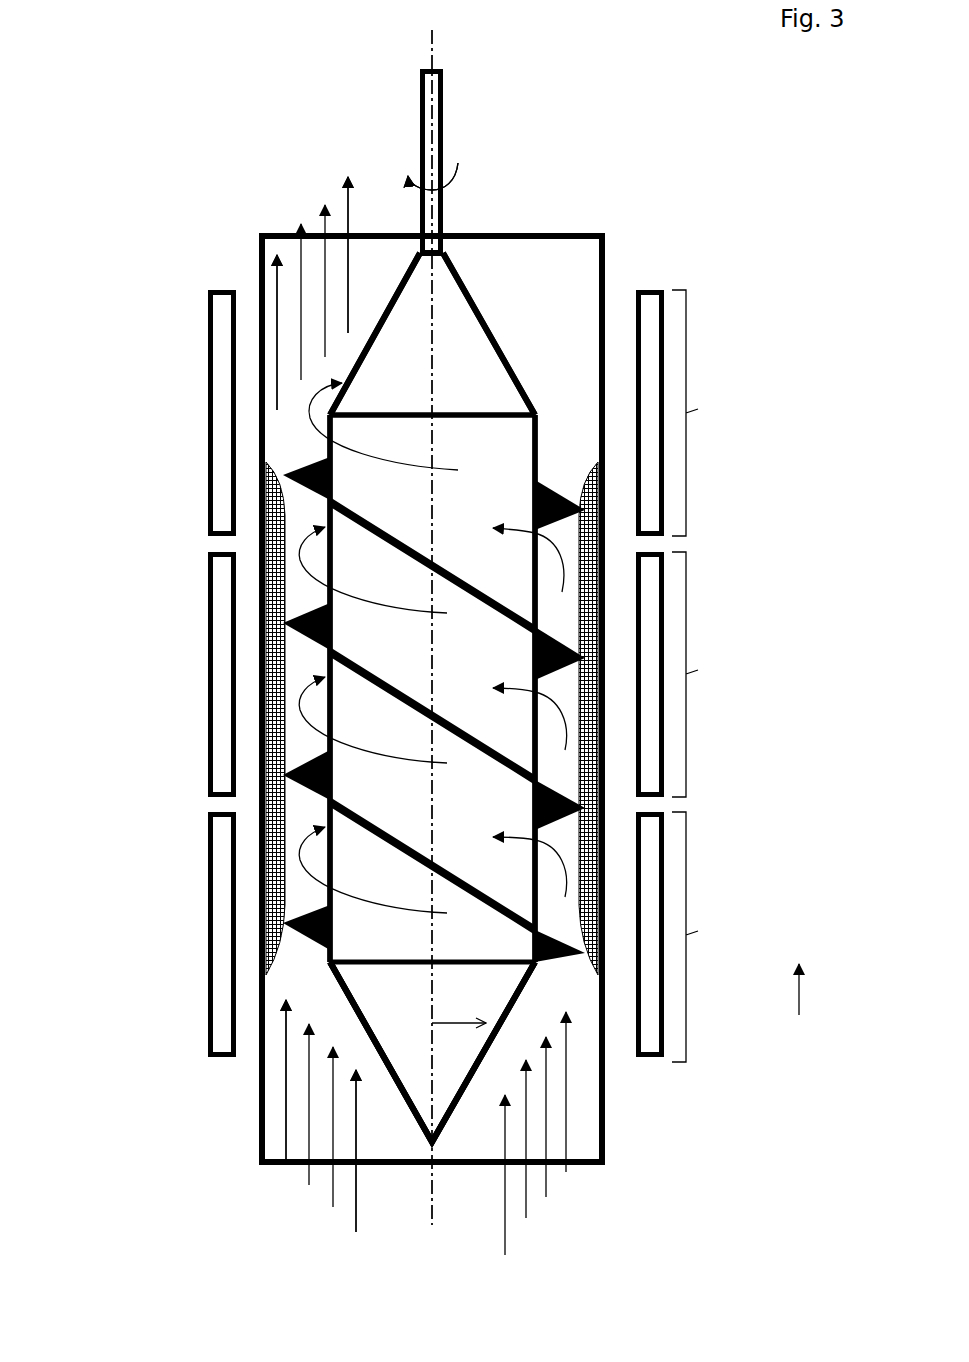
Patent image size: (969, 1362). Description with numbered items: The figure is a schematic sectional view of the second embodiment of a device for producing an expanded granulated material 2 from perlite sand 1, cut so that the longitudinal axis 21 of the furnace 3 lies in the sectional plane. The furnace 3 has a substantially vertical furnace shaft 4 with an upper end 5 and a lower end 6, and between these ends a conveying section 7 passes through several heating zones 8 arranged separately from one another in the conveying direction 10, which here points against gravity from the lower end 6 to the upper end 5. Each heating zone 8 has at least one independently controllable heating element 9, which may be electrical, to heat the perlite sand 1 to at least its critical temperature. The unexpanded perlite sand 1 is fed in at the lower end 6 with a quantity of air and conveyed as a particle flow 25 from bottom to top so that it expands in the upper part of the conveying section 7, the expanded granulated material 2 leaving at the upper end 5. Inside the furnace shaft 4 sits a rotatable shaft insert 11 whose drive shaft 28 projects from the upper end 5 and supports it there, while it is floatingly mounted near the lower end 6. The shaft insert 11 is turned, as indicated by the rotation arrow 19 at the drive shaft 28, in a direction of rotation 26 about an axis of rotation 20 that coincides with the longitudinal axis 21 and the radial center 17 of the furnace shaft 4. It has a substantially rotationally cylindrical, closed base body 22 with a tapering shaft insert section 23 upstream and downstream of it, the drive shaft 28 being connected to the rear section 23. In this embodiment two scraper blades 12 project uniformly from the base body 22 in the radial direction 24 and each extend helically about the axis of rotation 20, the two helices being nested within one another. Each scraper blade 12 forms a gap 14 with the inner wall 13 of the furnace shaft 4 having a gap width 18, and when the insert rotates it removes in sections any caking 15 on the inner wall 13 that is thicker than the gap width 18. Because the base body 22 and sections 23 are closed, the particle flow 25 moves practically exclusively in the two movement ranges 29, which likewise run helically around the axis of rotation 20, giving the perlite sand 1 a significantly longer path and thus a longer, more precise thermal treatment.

The perlite sand 1 is at (360, 1220).
The expanded granulated material 2 is at (348, 200).
The furnace 3 is at (92, 64).
The furnace shaft 4 is at (532, 305).
The upper end 5 is at (600, 236).
The lower end 6 is at (300, 1163).
The conveying section 7 is at (430, 1095).
The heating zones 8 is at (700, 676).
The heating element 9 is at (220, 615).
The conveying direction 10 is at (805, 1000).
The shaft insert 11 is at (322, 697).
The scraper blade 12 is at (305, 792).
The inner wall 13 is at (600, 1107).
The gap 14 is at (604, 940).
The caking 15 is at (264, 553).
The radial center 17 is at (432, 432).
The gap width 18 is at (604, 968).
The drive 19 is at (504, 159).
The axis of rotation 20 is at (620, 627).
The longitudinal axis 21 is at (337, 1099).
The base body 22 is at (343, 520).
The shaft insert section 23 is at (350, 378).
The radial direction 24 is at (440, 1022).
The particle flow 25 is at (133, 930).
The direction of rotation 26 is at (462, 162).
The drive shaft 28 is at (443, 98).
The movement ranges 29 is at (295, 657).